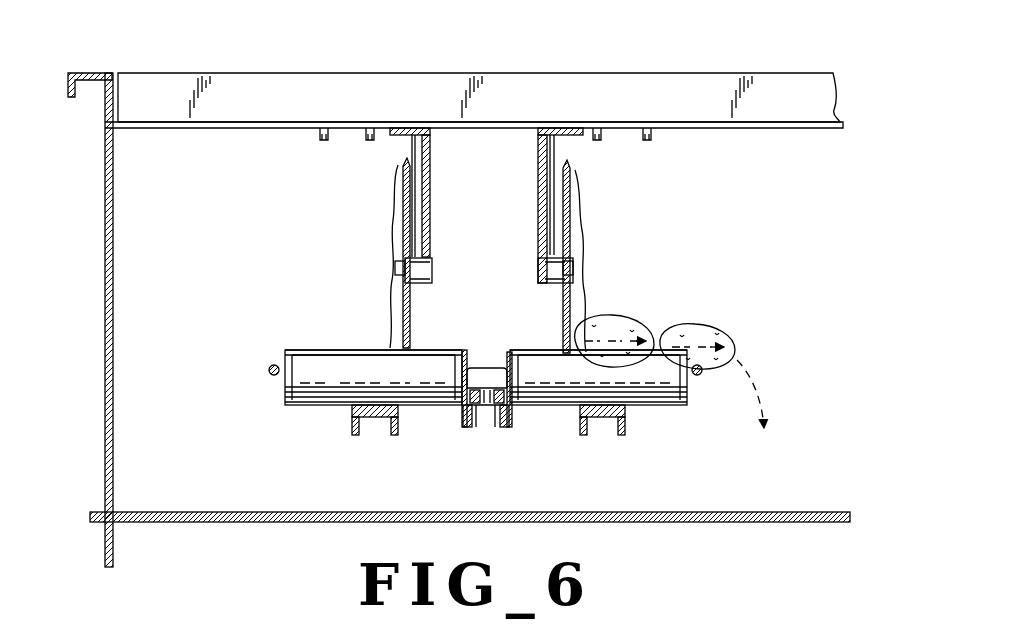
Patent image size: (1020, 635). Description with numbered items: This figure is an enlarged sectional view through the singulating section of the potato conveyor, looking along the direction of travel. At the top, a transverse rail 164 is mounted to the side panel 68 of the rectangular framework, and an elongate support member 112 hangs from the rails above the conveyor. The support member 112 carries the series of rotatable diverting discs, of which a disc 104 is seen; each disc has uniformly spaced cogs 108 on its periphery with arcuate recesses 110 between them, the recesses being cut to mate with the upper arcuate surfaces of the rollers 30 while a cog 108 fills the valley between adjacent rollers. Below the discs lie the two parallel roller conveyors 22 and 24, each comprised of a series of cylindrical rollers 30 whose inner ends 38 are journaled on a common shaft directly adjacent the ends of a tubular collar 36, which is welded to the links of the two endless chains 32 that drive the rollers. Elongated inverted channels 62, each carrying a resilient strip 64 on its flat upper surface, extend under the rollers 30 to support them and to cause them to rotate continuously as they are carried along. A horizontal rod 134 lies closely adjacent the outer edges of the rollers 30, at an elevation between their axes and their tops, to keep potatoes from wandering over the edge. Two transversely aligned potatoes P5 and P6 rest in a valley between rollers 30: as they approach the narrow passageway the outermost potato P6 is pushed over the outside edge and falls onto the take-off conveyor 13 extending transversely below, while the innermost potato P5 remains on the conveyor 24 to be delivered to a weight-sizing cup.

The transverse rail 164 is at (571, 86).
The side panel 68 is at (104, 268).
The take-off conveyor 13 is at (205, 510).
The support member 112 is at (537, 140).
The disc 104 is at (552, 204).
The cog 108 is at (400, 166).
The arcuate recess 110 is at (392, 240).
The roller conveyor 22 is at (328, 348).
The roller conveyor 24 is at (662, 408).
The roller 30 is at (310, 406).
The tubular collar 36 is at (490, 369).
The inner end of roller 38 is at (452, 406).
The endless chain 32 is at (492, 412).
The resilient strip 64 is at (355, 410).
The inverted channel 62 is at (396, 426).
The rod 134 is at (271, 374).
The innermost potato P5 is at (617, 318).
The outermost potato P6 is at (702, 325).